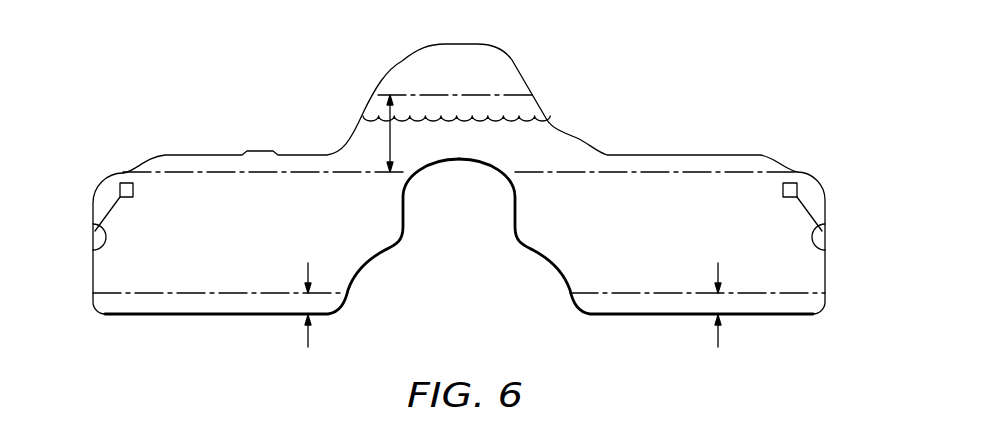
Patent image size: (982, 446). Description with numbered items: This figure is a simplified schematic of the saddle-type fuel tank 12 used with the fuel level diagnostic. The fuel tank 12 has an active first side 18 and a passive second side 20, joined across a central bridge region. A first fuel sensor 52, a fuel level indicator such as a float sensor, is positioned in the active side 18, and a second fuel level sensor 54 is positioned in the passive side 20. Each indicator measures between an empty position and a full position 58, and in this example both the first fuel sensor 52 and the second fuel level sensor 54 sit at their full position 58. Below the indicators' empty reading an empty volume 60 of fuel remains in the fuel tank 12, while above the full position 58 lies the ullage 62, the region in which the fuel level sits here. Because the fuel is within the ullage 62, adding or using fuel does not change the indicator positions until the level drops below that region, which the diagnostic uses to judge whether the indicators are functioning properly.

The fuel tank 12 is at (631, 156).
The first side 18 is at (676, 243).
The second side 20 is at (249, 243).
The first fuel sensor 52 is at (816, 214).
The second fuel level sensor 54 is at (108, 214).
The full position 58 is at (126, 183).
The empty volume 60 is at (308, 340).
The ullage 62 is at (390, 146).